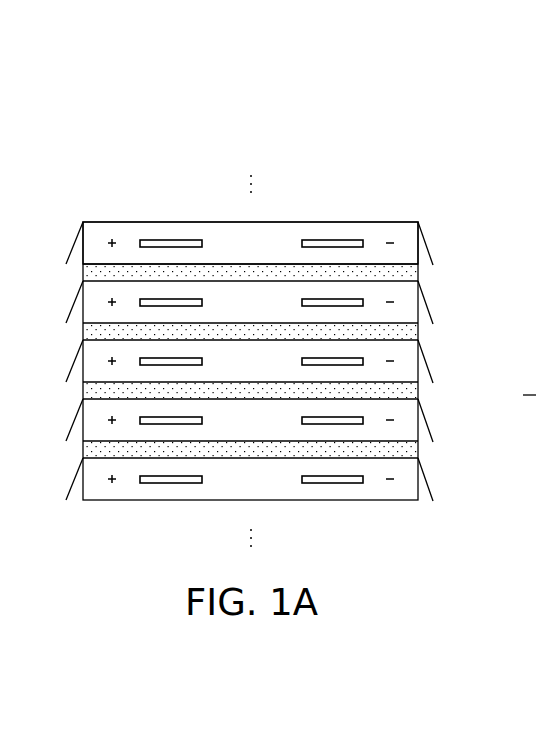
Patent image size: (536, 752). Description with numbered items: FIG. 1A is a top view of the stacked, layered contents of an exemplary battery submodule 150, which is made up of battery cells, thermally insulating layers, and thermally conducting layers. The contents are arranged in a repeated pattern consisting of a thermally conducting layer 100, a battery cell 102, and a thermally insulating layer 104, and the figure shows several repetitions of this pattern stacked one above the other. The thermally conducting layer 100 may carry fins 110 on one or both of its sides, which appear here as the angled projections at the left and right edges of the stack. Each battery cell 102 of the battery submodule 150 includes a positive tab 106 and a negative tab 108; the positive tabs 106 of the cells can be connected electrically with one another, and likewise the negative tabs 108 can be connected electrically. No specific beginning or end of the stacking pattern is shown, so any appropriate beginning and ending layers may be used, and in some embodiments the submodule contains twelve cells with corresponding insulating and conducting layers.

The battery submodule 150 is at (145, 88).
The thermally conducting layer 100 is at (110, 222).
The battery cell 102 is at (272, 243).
The thermally insulating layer 104 is at (420, 272).
The positive tab 106 is at (180, 240).
The negative tab 108 is at (348, 240).
The fins 110 is at (429, 246).